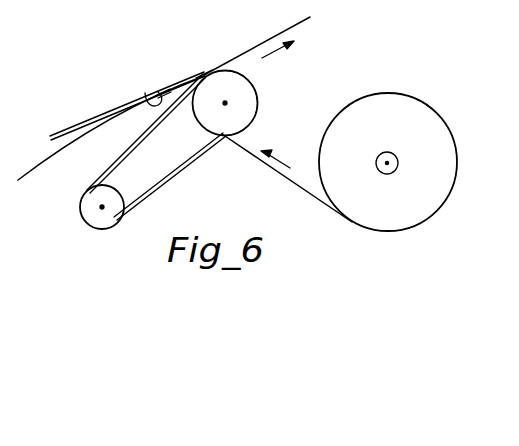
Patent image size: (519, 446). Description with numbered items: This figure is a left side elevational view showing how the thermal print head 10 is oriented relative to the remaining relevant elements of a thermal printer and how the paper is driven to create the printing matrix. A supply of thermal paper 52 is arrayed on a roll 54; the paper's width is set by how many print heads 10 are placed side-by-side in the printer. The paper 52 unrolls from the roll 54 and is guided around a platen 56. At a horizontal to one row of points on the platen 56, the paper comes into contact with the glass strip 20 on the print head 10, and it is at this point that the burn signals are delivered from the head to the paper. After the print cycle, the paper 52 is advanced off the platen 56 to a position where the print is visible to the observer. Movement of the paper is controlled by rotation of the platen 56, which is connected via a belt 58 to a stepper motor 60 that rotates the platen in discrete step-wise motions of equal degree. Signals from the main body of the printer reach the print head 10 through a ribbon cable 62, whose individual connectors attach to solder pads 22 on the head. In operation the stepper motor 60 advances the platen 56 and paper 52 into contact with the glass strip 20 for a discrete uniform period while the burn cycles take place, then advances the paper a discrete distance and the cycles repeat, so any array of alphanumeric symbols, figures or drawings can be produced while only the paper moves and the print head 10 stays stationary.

The print head 10 is at (77, 121).
The glass strip 20 is at (204, 72).
The solder pads 22 is at (145, 93).
The thermal paper 52 is at (273, 41).
The roll 54 is at (394, 171).
The platen 56 is at (227, 103).
The belt 58 is at (175, 183).
The stepper motor 60 is at (102, 207).
The ribbon cable 62 is at (40, 163).